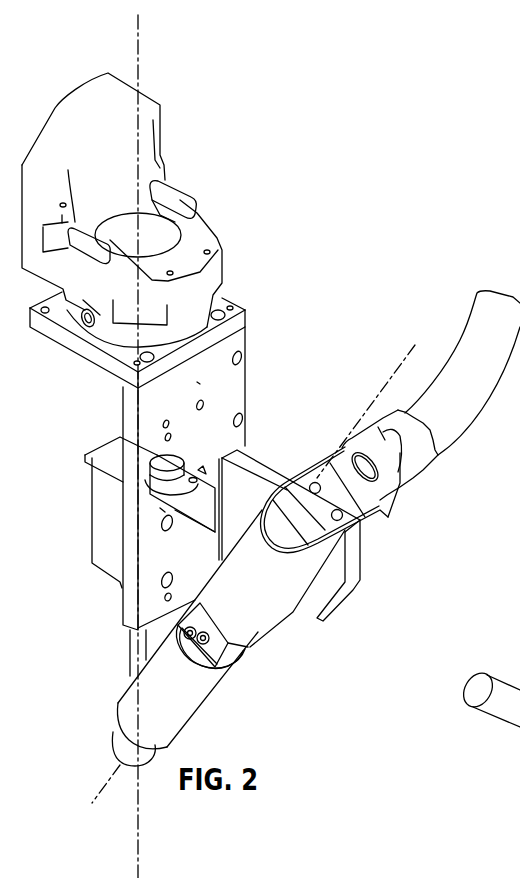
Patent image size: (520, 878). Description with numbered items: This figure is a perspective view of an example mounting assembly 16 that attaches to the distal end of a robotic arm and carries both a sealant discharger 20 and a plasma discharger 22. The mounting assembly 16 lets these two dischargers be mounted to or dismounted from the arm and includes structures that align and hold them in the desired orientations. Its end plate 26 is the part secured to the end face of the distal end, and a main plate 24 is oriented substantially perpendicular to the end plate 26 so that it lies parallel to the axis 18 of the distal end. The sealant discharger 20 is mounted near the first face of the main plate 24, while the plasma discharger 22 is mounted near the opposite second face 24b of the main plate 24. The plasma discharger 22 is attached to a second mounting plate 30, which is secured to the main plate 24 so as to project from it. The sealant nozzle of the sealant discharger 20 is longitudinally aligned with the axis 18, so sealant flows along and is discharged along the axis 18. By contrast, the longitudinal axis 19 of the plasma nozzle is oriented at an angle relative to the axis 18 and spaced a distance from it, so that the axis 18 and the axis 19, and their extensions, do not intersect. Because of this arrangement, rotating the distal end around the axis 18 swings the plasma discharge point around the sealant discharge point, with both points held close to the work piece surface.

The mounting assembly 16 is at (261, 79).
The axis 18 is at (140, 37).
The longitudinal axis of the plasma nozzle 19 is at (393, 373).
The sealant discharger 20 is at (105, 522).
The plasma discharger 22 is at (260, 583).
The main plate 24 is at (240, 407).
The second face 24b is at (198, 382).
The end plate 26 is at (80, 348).
The second mounting plate 30 is at (259, 470).